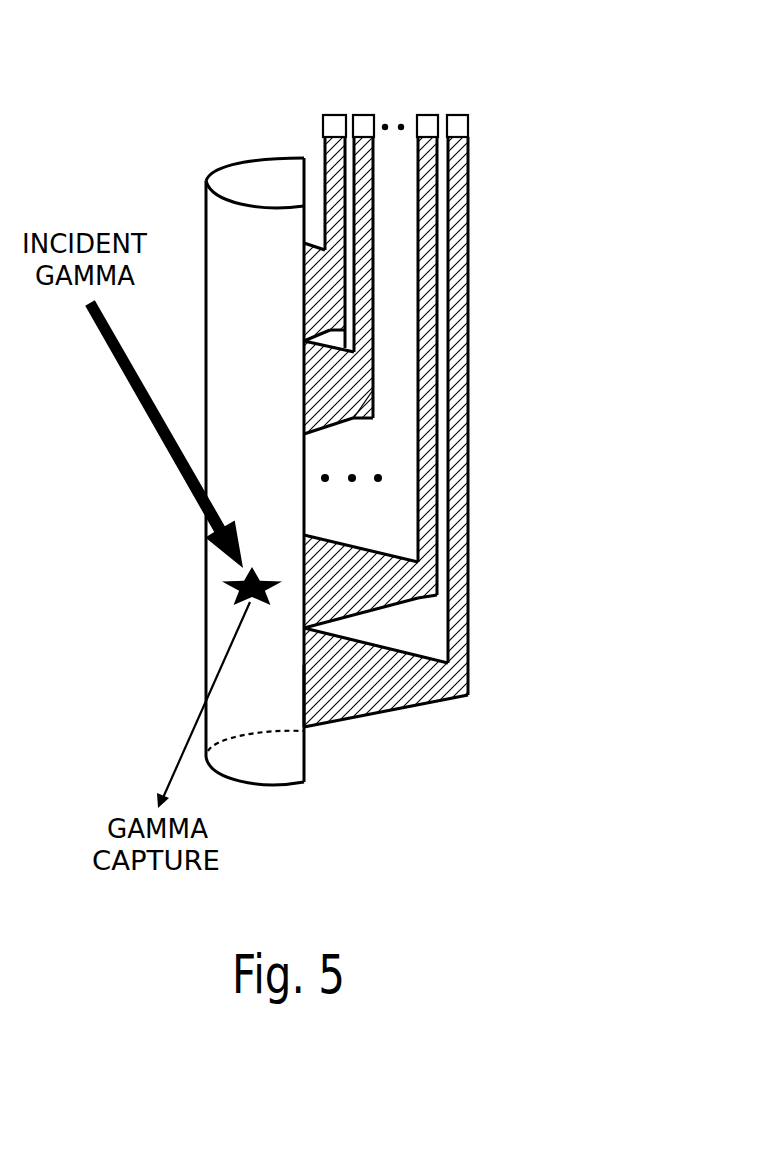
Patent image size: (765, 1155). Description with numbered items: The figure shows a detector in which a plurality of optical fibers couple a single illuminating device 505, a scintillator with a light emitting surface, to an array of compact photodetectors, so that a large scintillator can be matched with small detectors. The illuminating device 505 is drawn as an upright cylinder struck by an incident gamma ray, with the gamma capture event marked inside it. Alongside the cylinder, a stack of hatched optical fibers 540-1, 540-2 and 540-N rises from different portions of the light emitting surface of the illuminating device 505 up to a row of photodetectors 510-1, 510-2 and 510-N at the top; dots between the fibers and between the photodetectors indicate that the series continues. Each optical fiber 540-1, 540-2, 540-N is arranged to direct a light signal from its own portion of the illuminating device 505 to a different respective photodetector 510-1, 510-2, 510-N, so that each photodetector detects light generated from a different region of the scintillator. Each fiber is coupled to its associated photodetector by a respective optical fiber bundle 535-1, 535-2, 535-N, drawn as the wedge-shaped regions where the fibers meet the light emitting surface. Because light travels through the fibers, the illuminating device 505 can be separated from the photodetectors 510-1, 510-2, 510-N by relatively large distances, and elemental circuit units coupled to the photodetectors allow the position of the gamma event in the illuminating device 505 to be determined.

The illuminating device 505 is at (265, 172).
The photodetector 510-N is at (364, 114).
The photodetector 510-2 is at (430, 114).
The photodetector 510-1 is at (468, 125).
The optical fiber 540-N is at (368, 303).
The optical fiber 540-2 is at (430, 522).
The optical fiber 540-1 is at (458, 582).
The optical fiber bundle 535-N is at (343, 403).
The optical fiber bundle 535-2 is at (357, 597).
The optical fiber bundle 535-1 is at (337, 697).